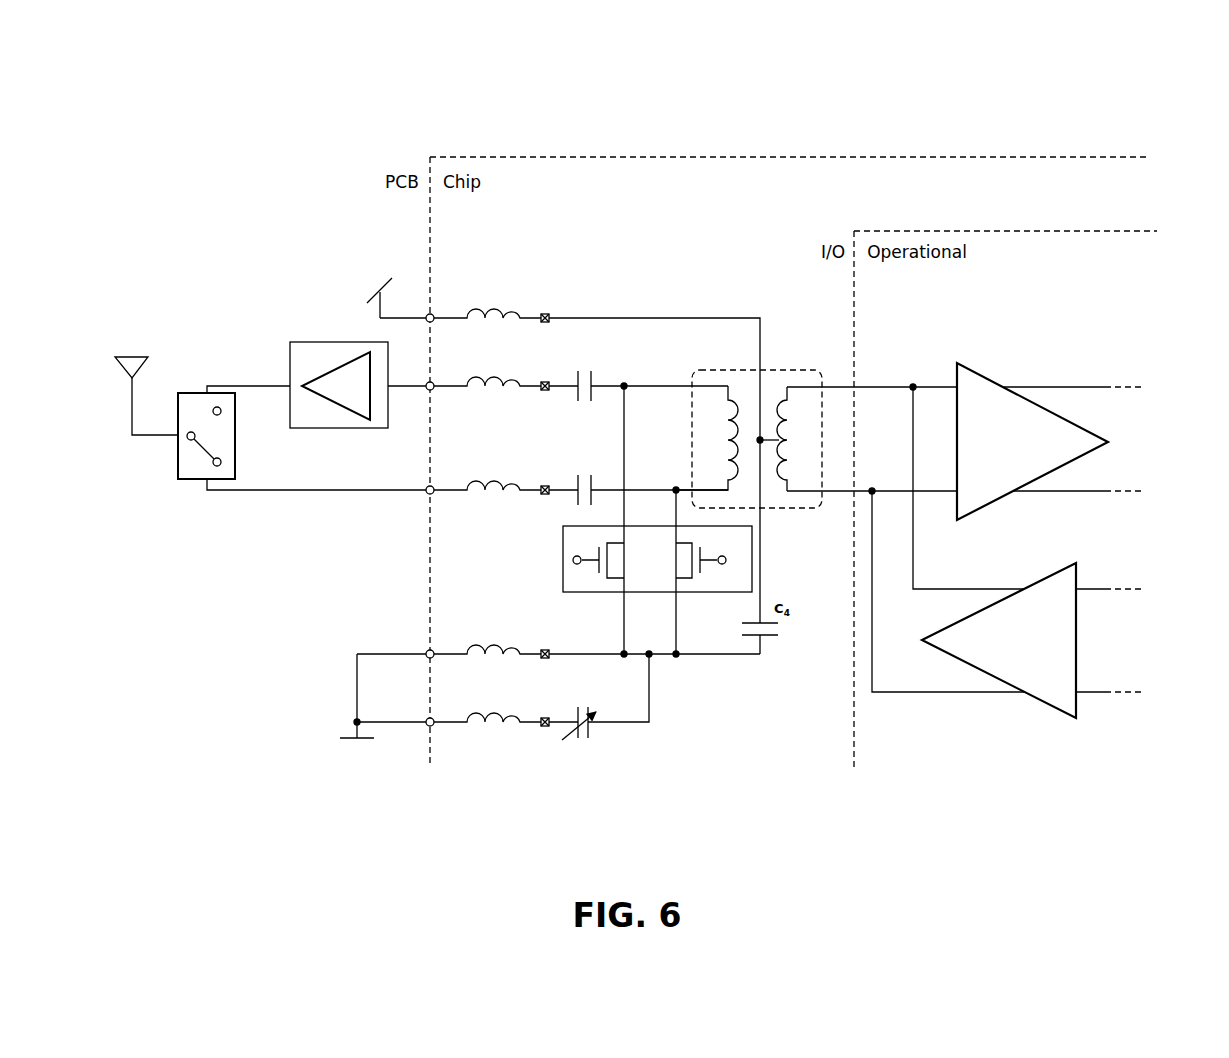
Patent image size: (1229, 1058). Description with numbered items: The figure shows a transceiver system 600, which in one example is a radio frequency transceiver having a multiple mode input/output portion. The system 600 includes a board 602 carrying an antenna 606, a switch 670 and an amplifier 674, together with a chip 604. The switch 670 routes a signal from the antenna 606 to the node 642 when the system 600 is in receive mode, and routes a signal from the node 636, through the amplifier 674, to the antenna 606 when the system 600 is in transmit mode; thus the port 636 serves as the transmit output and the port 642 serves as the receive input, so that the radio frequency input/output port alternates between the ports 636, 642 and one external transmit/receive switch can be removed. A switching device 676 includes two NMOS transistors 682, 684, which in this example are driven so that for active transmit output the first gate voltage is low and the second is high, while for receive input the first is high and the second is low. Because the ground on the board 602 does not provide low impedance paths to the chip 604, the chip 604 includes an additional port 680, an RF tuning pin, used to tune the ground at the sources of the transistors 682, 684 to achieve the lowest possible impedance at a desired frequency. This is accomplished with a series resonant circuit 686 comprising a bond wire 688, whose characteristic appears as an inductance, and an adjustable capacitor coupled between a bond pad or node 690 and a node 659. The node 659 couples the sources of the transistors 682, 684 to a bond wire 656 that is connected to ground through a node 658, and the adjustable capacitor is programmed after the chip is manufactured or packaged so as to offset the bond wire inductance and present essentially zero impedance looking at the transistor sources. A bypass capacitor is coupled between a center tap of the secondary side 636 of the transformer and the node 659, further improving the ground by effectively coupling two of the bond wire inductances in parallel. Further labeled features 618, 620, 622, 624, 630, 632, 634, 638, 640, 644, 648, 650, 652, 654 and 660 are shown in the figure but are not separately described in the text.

The system 600 is at (1150, 128).
The board 602 is at (296, 218).
The chip 604 is at (565, 157).
The antenna 606 is at (138, 348).
The on-chip front-end circuit 618 is at (639, 242).
The operational block 620 is at (927, 231).
The low noise amplifier (LNA) 622 is at (996, 380).
The power amplifier (PA) 624 is at (1022, 695).
The center tap 630 is at (785, 370).
The transformer 632 is at (692, 356).
The primary inductor Lp 634 is at (728, 400).
The port 636 is at (433, 382).
The inductor L2 638 is at (518, 383).
The primary winding terminal 640 is at (720, 500).
The port 642 is at (433, 486).
The inductor L3 644 is at (518, 487).
The VDD pin 648 is at (436, 312).
The inductor L1 650 is at (542, 314).
The bond pad 652 is at (544, 382).
The bond pad 654 is at (544, 486).
The bond wire 656 is at (522, 650).
The node 658 is at (433, 650).
The node 659 is at (546, 650).
The bond pad 660 is at (548, 312).
The switch 670 is at (197, 393).
The amplifier 674 is at (340, 342).
The switching device 676 is at (563, 560).
The port 680 is at (433, 718).
The NMOS transistor 682 is at (623, 575).
The NMOS transistor 684 is at (680, 545).
The series resonant circuit 686 is at (522, 756).
The bond wire 688 is at (522, 718).
The bond pad 690 is at (546, 718).